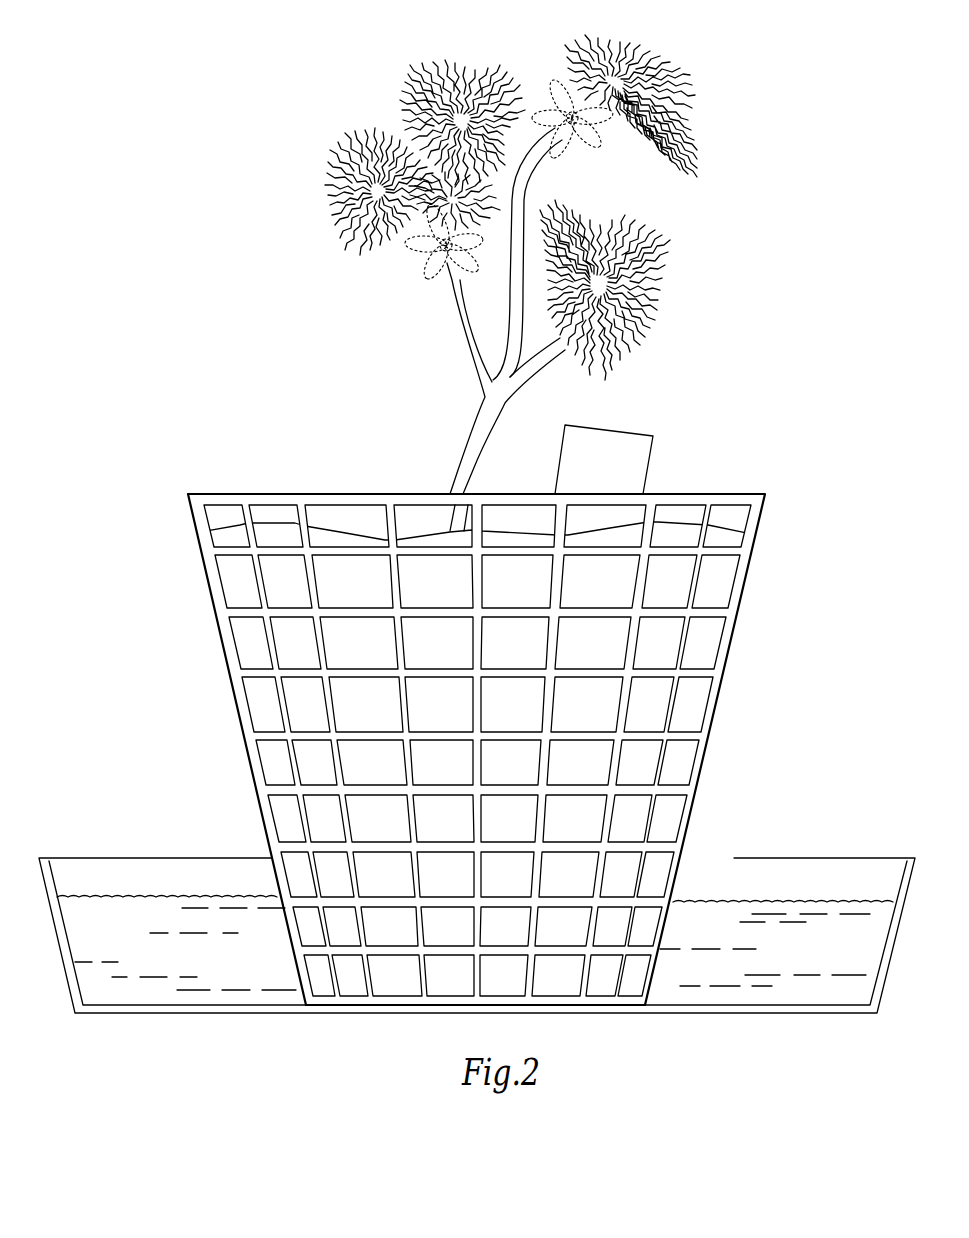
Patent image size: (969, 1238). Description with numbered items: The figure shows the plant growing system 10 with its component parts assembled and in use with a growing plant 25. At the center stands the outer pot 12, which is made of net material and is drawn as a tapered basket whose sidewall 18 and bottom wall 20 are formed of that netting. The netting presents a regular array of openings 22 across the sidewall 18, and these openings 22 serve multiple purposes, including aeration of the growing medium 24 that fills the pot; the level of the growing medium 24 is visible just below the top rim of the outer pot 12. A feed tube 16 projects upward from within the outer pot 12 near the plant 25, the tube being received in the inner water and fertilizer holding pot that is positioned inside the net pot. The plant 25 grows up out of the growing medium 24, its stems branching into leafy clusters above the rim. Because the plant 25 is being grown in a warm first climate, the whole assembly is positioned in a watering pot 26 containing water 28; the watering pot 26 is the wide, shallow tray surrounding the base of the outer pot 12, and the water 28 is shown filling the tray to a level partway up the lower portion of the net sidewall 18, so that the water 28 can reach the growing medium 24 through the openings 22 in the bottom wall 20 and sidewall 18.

The plant growing system 10 is at (172, 448).
The outer pot 12 is at (208, 580).
The feed tube 16 is at (634, 442).
The sidewall 18 is at (733, 620).
The bottom wall 20 is at (403, 1005).
The openings 22 is at (702, 650).
The growing medium 24 is at (332, 533).
The plant 25 is at (428, 80).
The watering pot 26 is at (768, 858).
The water 28 is at (157, 897).